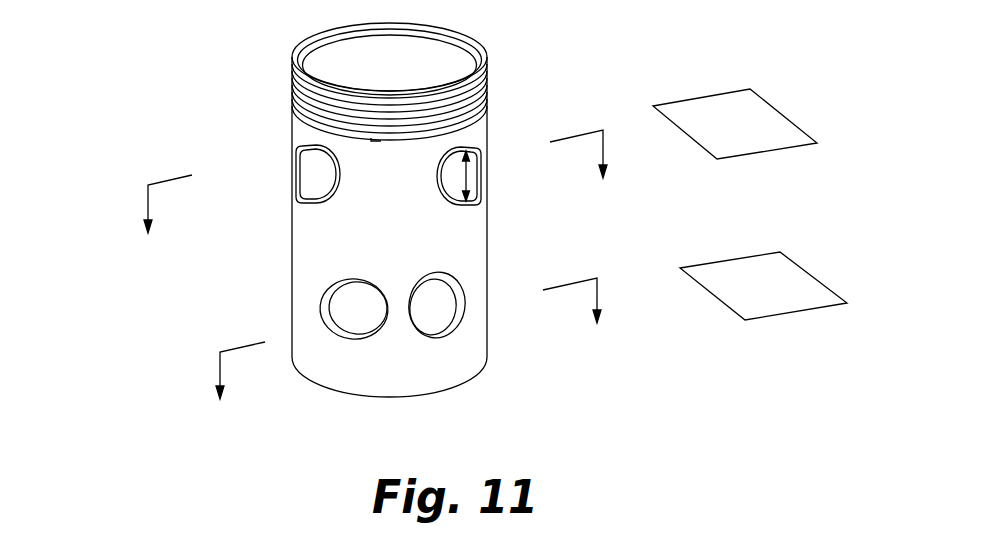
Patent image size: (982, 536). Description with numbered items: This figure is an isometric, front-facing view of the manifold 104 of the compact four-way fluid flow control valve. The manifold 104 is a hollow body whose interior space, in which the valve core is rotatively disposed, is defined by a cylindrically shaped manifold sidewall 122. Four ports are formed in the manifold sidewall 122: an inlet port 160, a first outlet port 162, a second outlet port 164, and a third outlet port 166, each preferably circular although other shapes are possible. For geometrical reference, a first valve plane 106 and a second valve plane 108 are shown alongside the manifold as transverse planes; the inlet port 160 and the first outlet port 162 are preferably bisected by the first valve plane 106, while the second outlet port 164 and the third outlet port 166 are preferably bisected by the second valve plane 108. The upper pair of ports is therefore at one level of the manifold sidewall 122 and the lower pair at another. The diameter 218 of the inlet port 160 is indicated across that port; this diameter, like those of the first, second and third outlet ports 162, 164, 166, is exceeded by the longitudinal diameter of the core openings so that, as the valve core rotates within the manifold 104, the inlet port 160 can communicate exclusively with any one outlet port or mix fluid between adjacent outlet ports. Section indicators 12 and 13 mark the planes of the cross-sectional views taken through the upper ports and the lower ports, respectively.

The manifold 104 is at (404, 205).
The first valve plane 106 is at (758, 152).
The second valve plane 108 is at (782, 315).
The manifold sidewall 122 is at (396, 240).
The inlet port 160 is at (483, 192).
The first outlet port 162 is at (301, 181).
The second outlet port 164 is at (326, 303).
The third outlet port 166 is at (455, 324).
The diameter of the inlet port 218 is at (468, 172).
The section line 12- 12 is at (377, 183).
The section line 13- 13 is at (408, 342).